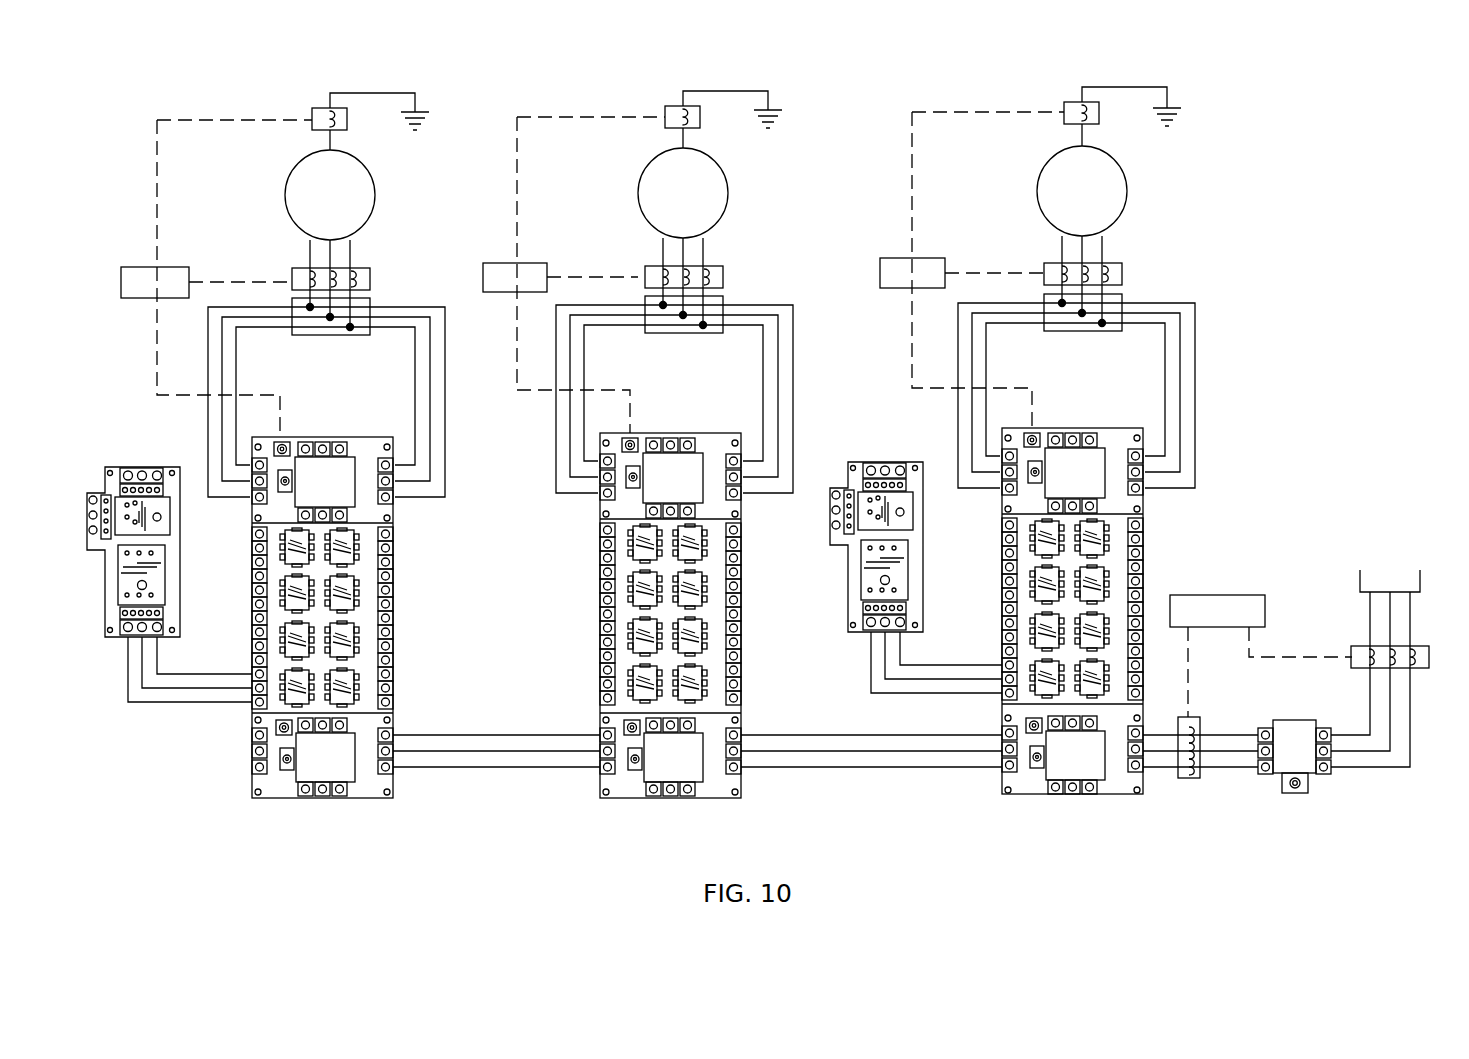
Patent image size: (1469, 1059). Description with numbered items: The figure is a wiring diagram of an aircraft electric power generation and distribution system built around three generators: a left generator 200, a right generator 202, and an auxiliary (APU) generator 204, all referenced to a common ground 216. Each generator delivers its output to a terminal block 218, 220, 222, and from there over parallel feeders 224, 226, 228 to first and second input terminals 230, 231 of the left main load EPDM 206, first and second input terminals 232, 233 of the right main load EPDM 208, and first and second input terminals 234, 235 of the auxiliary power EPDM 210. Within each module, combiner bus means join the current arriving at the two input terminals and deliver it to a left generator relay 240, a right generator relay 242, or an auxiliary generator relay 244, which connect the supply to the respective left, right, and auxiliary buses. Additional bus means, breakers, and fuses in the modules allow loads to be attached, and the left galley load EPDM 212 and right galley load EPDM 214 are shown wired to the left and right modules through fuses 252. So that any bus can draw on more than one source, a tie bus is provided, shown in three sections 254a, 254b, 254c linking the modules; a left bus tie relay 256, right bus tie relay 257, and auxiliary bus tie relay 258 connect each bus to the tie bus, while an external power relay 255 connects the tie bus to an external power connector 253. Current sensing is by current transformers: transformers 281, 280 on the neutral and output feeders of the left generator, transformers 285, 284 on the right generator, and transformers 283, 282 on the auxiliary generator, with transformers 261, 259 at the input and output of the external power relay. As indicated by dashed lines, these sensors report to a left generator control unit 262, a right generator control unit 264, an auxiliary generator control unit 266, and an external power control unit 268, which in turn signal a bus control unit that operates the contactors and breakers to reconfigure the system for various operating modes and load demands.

The left generator 200 is at (368, 193).
The right generator 202 is at (1038, 183).
The auxiliary generator 204 is at (727, 180).
The left main load EPDM 206 is at (346, 615).
The right main load EPDM 208 is at (1103, 613).
The auxiliary power EPDM 210 is at (703, 624).
The left galley load EPDM 212 is at (163, 637).
The right galley load EPDM 214 is at (863, 592).
The common ground 216 is at (428, 112).
The terminal block 218 is at (370, 303).
The terminal block 220 is at (1120, 298).
The terminal block 222 is at (723, 298).
The parallel feeders 224 is at (398, 342).
The parallel feeders 226 is at (1148, 340).
The parallel feeders 228 is at (750, 343).
The first input terminal 230 is at (242, 512).
The second input terminal 231 is at (417, 508).
The first input terminal 232 is at (993, 495).
The second input terminal 233 is at (1170, 502).
The first input terminal 234 is at (590, 502).
The second input terminal 235 is at (762, 500).
The left generator relay 240 is at (320, 462).
The right generator relay 242 is at (1076, 457).
The auxiliary generator relay 244 is at (673, 458).
The fuses 252 is at (292, 677).
The external power connector 253 is at (1358, 580).
The tie bus 254a is at (1227, 775).
The tie bus 254b is at (867, 775).
The tie bus 254c is at (490, 775).
The external power relay 255 is at (1308, 785).
The left bus tie relay 256 is at (310, 775).
The right bus tie relay 257 is at (1050, 768).
The auxiliary bus tie relay 258 is at (650, 770).
The current transformer 259 is at (1190, 779).
The current transformer 261 is at (1353, 672).
The left generator control unit 262 is at (172, 267).
The right generator control unit 264 is at (928, 258).
The auxiliary generator control unit 266 is at (532, 263).
The external power control unit 268 is at (1227, 595).
The current transformer 280 is at (362, 268).
The current transformer 281 is at (320, 108).
The current transformer 282 is at (715, 266).
The current transformer 283 is at (662, 110).
The current transformer 284 is at (1113, 262).
The current transformer 285 is at (1070, 102).